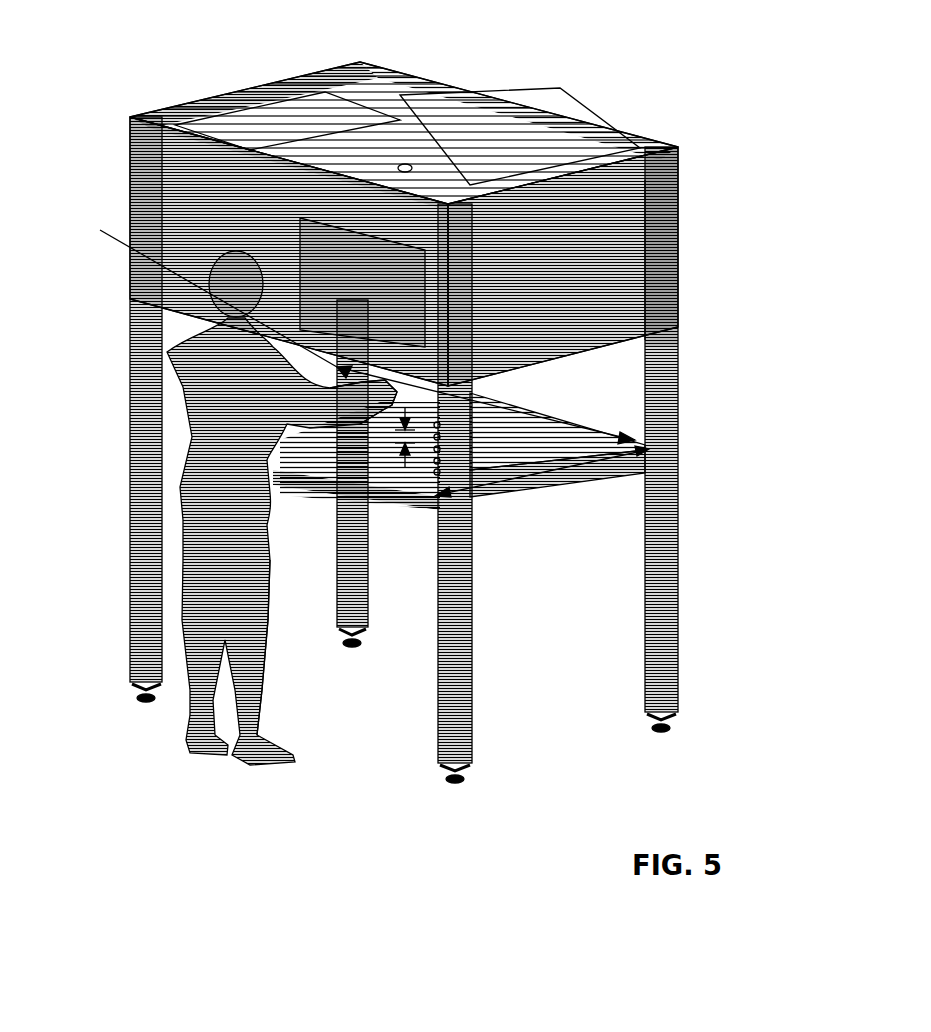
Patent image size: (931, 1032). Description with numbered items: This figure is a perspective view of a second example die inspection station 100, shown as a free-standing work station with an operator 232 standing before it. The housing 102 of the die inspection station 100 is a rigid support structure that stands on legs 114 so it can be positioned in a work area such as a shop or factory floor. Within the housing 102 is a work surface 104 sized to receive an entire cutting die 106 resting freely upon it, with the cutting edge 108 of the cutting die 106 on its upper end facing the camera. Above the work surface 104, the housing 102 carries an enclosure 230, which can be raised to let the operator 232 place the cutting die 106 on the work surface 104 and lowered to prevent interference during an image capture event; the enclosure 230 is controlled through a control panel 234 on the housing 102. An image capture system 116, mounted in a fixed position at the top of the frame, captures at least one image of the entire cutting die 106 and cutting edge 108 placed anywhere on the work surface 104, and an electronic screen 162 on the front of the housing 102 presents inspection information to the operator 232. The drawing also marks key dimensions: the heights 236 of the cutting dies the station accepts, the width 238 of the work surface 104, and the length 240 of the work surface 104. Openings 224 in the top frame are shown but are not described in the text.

The die inspection system 100 is at (730, 82).
The housing 102 is at (165, 378).
The work surface 104 is at (535, 475).
The cutting die 106 is at (370, 423).
The cutting edge 108 is at (200, 283).
The legs 114 is at (460, 682).
The image capture system 116 is at (405, 165).
The electronic screen 162 is at (337, 240).
The top frame openings 224 is at (246, 118).
The enclosure 230 is at (632, 263).
The operator 232 is at (260, 673).
The control panel 234 is at (450, 457).
The heights 236 is at (403, 463).
The width 238 is at (585, 433).
The length 240 is at (580, 455).